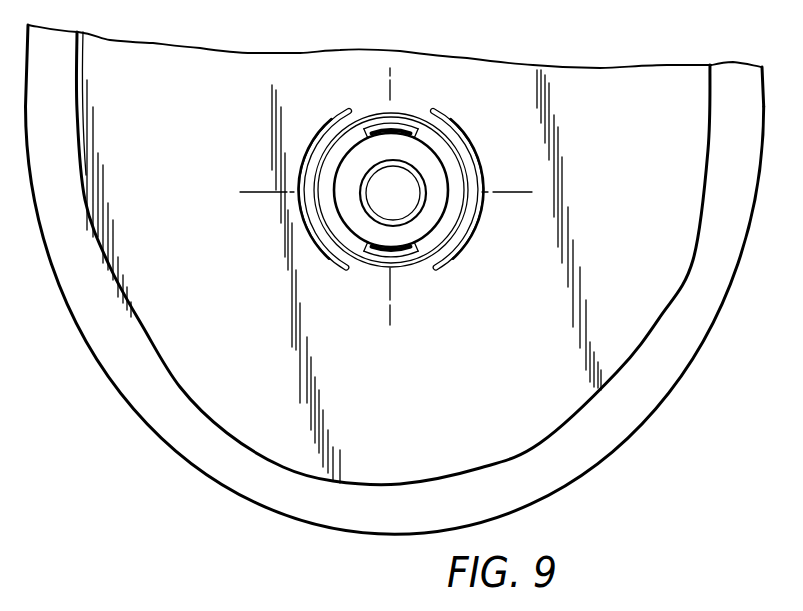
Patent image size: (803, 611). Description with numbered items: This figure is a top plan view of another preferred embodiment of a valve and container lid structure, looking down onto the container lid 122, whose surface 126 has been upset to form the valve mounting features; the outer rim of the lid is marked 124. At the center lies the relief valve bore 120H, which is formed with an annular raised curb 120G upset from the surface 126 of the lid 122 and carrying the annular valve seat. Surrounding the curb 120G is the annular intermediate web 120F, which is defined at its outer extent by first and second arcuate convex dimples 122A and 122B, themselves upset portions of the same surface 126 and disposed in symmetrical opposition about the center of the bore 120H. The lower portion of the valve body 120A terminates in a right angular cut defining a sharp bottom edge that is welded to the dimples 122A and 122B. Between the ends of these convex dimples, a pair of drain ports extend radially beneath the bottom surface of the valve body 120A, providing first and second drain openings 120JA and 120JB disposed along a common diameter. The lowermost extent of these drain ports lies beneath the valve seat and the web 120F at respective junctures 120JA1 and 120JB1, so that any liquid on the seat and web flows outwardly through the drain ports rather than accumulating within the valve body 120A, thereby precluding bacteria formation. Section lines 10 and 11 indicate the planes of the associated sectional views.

The section line 10- 10 is at (519, 168).
The section line 11- 11 is at (364, 312).
The valve body 120A is at (374, 266).
The annular intermediate web 120F is at (437, 210).
The annular raised curb 120G is at (420, 165).
The relief valve bore 120H is at (418, 203).
The first drain opening 120JA is at (401, 112).
The juncture of first drain port 120JA1 is at (407, 131).
The second drain opening 120JB is at (412, 272).
The juncture of second drain port 120JB1 is at (395, 249).
The container lid 122 is at (181, 476).
The first arcuate convex dimple 122A is at (312, 238).
The second arcuate convex dimple 122B is at (468, 235).
The bowl outer rim 124 is at (438, 521).
The surface of the container lid 126 is at (445, 417).